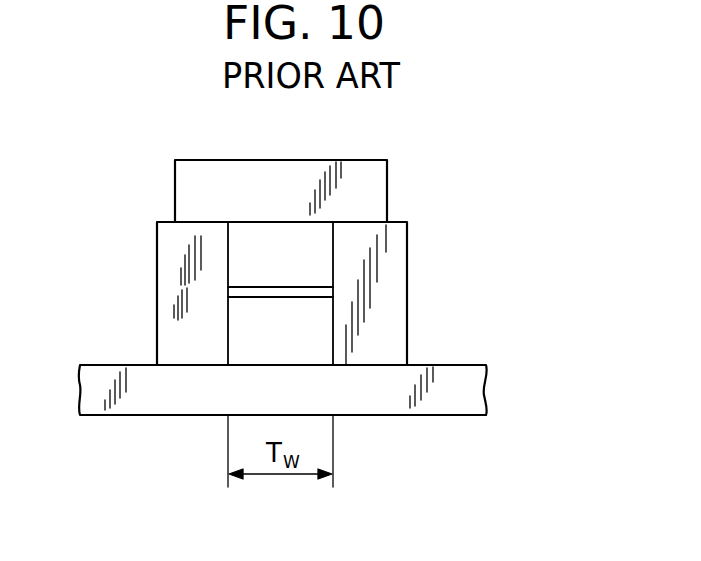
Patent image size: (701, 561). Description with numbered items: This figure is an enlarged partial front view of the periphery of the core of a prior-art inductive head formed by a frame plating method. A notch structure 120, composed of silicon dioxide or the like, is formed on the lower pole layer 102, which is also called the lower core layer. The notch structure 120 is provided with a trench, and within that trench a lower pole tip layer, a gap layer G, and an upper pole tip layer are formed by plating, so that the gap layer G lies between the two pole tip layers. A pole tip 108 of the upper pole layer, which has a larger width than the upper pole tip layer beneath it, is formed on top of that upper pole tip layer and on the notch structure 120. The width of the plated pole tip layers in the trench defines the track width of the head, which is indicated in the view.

The pole tip 108 is at (368, 185).
The notch structure 120 is at (418, 277).
The gap layer G is at (250, 292).
The lower pole layer 102 is at (468, 393).